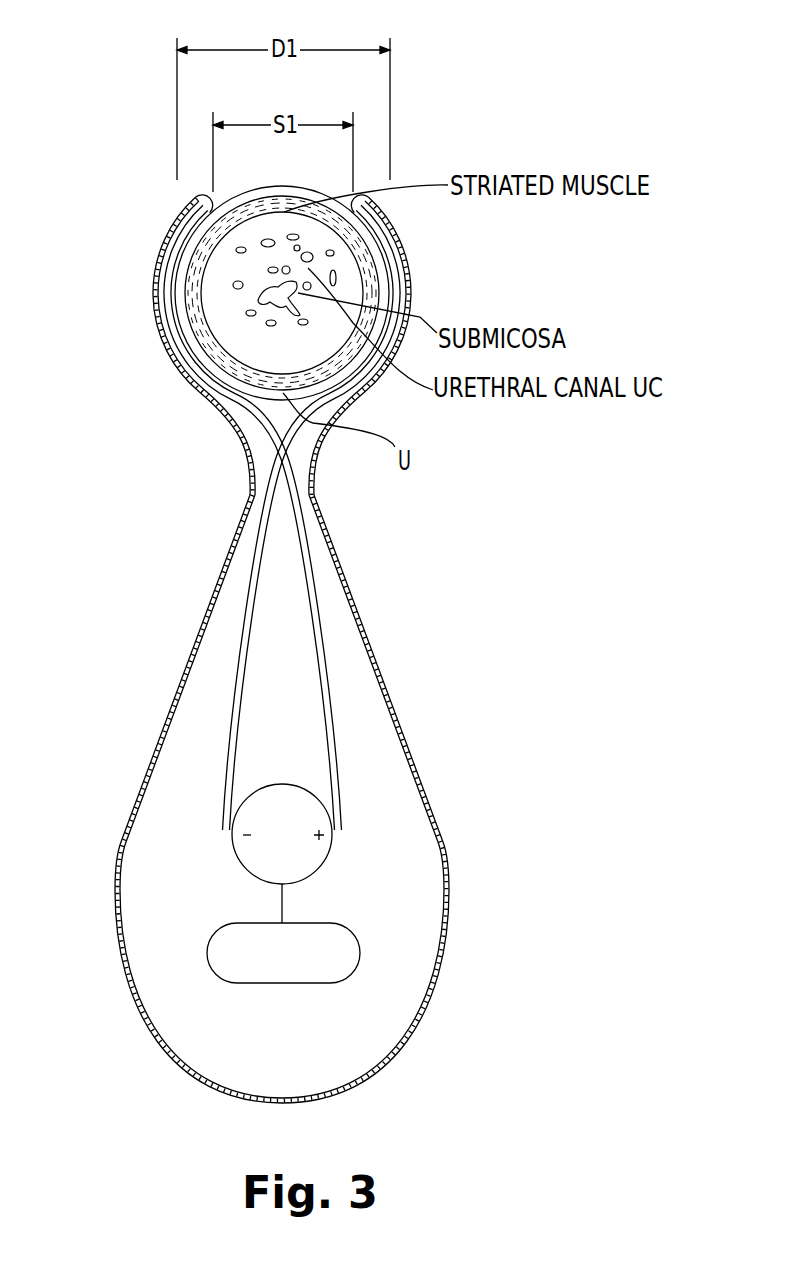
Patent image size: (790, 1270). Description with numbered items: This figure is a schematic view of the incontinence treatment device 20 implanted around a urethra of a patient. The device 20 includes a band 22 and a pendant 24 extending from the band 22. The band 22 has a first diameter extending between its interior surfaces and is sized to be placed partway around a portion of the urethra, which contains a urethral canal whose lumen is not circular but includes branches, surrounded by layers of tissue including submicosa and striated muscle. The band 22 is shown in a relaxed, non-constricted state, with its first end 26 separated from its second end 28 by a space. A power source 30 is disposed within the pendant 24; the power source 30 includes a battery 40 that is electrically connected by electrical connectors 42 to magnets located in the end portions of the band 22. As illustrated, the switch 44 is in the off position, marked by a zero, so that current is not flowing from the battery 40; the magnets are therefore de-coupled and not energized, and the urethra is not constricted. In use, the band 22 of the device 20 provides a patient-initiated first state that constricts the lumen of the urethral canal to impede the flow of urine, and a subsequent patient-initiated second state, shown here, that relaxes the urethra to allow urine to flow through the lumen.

The incontinence treatment device 20 is at (288, 557).
The band 22 is at (246, 284).
The pendant 24 is at (431, 803).
The first end 26 is at (206, 192).
The second end 28 is at (358, 192).
The power source 30 is at (228, 846).
The battery 40 is at (312, 857).
The electrical connectors 42 is at (242, 658).
The switch 44 is at (342, 950).